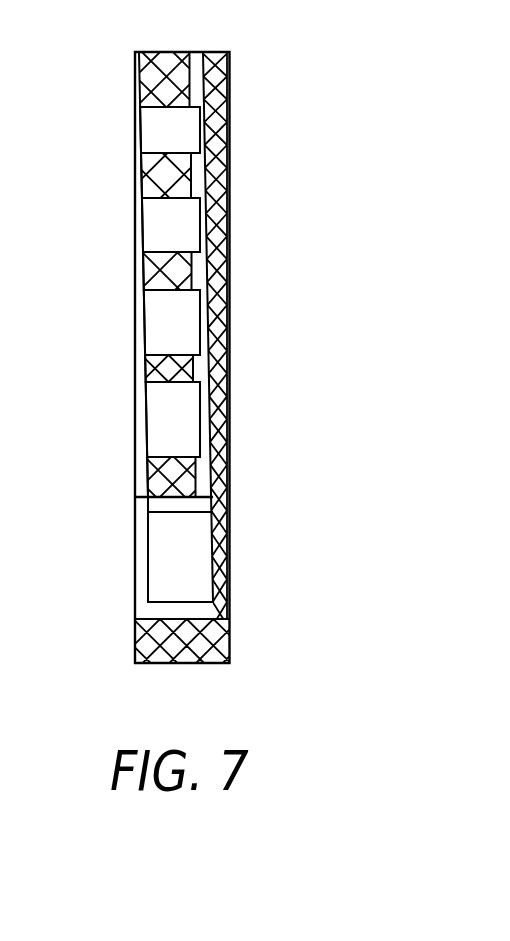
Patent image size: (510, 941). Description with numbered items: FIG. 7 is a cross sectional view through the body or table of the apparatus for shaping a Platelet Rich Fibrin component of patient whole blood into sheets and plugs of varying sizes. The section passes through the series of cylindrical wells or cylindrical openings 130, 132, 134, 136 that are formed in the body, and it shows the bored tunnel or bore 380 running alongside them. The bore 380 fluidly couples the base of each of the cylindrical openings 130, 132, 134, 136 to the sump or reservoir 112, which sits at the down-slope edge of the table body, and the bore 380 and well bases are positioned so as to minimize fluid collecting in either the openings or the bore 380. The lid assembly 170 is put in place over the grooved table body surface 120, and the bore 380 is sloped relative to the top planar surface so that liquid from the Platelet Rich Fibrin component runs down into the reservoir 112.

The sump or reservoir 112 is at (160, 555).
The grooved table body surface 120 is at (136, 281).
The cylindrical opening 130 is at (160, 423).
The cylindrical opening 132 is at (160, 322).
The cylindrical opening 134 is at (160, 222).
The cylindrical opening 136 is at (160, 147).
The lid assembly 170 is at (198, 125).
The bore 380 is at (212, 93).